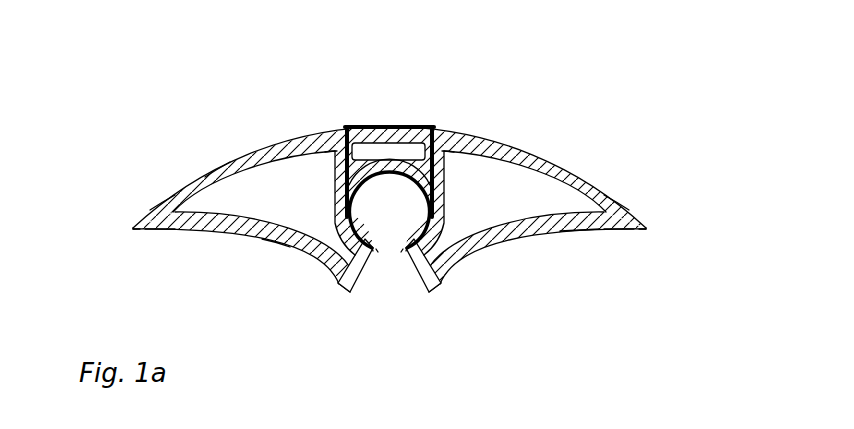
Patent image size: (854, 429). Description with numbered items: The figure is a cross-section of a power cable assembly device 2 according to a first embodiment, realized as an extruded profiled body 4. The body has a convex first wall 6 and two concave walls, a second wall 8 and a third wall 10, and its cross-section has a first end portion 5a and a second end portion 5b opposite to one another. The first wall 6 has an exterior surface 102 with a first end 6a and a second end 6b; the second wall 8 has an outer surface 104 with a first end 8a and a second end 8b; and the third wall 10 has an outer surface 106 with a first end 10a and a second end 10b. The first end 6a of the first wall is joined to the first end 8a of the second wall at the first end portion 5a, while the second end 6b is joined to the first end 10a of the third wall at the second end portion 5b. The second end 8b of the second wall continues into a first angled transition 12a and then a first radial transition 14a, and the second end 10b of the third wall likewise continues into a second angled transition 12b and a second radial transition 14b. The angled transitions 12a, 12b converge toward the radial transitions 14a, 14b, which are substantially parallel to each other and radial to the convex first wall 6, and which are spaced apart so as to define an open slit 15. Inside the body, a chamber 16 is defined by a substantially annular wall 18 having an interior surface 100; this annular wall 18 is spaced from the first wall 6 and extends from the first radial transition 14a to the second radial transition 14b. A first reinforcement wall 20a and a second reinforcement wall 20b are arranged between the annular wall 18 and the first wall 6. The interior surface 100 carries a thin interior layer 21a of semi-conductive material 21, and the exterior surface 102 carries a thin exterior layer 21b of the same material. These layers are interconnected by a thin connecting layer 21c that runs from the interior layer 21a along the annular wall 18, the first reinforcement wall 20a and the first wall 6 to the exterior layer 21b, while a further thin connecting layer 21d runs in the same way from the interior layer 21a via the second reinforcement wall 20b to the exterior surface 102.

The power cable assembly device 2 is at (296, 77).
The extruded profiled body 4 is at (480, 75).
The first end portion 5a is at (128, 229).
The second end portion 5b is at (656, 228).
The first wall 6 is at (557, 163).
The first end of first wall 6a is at (160, 201).
The second end of first wall 6b is at (630, 208).
The second wall 8 is at (225, 232).
The first end of second wall 8a is at (160, 232).
The second end of second wall 8b is at (343, 291).
The third wall 10 is at (530, 236).
The first end of third wall 10a is at (626, 238).
The second end of third wall 10b is at (436, 291).
The first angled transition 12a is at (362, 293).
The second angled transition 12b is at (410, 275).
The first radial transition 14a is at (383, 252).
The second radial transition 14b is at (397, 252).
The open slit 15 is at (388, 253).
The chamber 16 is at (397, 222).
The annular wall 18 is at (349, 203).
The first reinforcement wall 20a is at (333, 162).
The second reinforcement wall 20b is at (470, 138).
The semi-conductive material 21 is at (424, 109).
The thin interior layer 21a is at (398, 125).
The thin exterior layer 21b is at (365, 125).
The thin connecting layer 21c is at (345, 180).
The further thin connecting layer 21d is at (462, 165).
The interior surface 100 is at (433, 198).
The exterior surface 102 is at (217, 164).
The outer surface 104 is at (275, 243).
The outer surface 106 is at (578, 236).